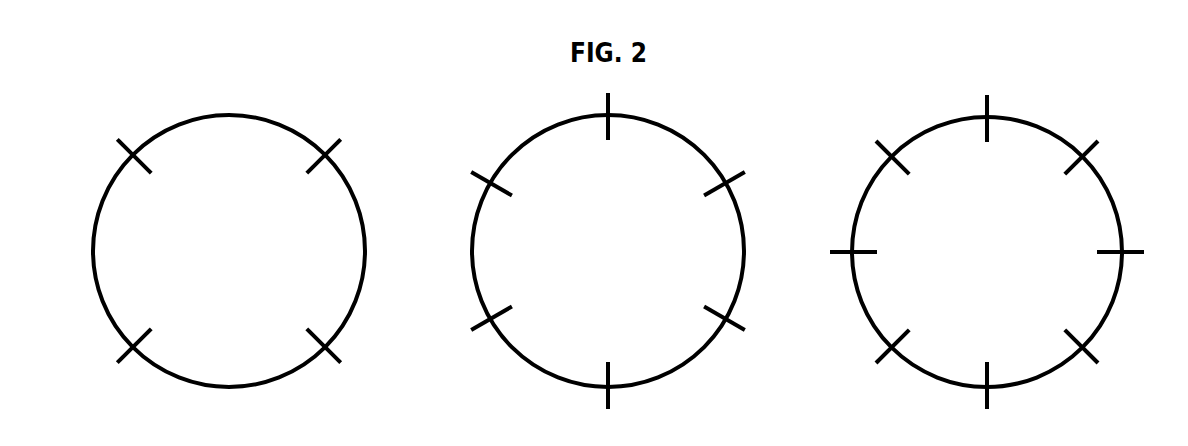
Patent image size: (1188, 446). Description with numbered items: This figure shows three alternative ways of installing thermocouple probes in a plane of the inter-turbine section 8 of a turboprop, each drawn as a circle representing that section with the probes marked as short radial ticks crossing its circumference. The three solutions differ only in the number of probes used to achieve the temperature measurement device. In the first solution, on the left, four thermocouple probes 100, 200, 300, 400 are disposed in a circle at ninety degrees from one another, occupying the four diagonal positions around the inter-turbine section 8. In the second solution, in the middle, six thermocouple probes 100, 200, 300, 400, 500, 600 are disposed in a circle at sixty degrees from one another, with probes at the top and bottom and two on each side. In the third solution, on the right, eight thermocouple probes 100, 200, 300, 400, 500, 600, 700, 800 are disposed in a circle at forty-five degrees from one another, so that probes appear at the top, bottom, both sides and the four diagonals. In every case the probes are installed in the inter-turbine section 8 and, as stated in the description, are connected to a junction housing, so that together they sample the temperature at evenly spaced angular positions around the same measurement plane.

The inter-turbine section 8 is at (222, 264).
The thermocouple probe 100 is at (530, 178).
The thermocouple probe 200 is at (638, 146).
The thermocouple probe 300 is at (685, 252).
The thermocouple probe 400 is at (630, 300).
The thermocouple probe 500 is at (845, 356).
The thermocouple probe 600 is at (737, 347).
The thermocouple probe 700 is at (909, 333).
The thermocouple probe 800 is at (872, 252).